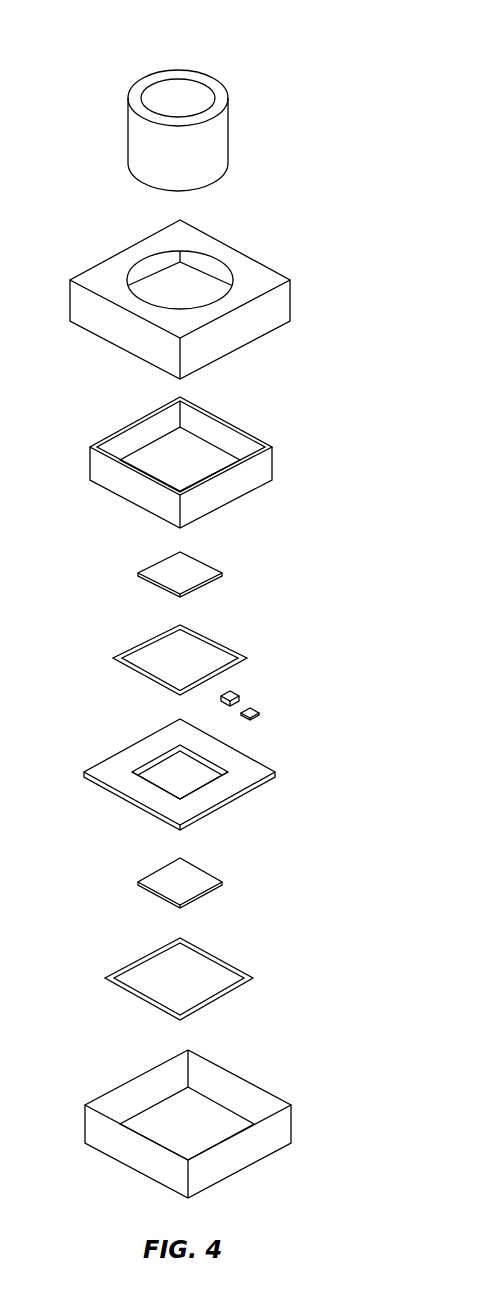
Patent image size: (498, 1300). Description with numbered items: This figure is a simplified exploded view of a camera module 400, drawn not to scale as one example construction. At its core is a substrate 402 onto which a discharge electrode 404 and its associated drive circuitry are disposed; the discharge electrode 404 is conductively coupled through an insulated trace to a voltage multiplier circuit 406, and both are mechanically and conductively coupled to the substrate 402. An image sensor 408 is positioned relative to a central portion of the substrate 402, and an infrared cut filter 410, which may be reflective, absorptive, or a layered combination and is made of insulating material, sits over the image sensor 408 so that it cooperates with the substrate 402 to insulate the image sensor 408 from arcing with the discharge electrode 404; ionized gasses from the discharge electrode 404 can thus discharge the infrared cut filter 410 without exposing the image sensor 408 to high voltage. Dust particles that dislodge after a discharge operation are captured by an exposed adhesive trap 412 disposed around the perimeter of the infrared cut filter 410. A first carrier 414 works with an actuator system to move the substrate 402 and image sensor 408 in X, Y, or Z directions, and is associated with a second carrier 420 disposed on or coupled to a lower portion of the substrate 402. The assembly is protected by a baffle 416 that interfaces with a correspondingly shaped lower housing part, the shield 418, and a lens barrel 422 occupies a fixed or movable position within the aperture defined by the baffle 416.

The camera module 400 is at (73, 48).
The substrate 402 is at (276, 772).
The discharge electrode 404 is at (240, 697).
The voltage multiplier circuit 406 is at (260, 714).
The image sensor 408 is at (223, 882).
The infrared cut filter 410 is at (223, 573).
The exposed adhesive trap 412 is at (248, 657).
The first carrier 414 is at (273, 460).
The baffle 416 is at (291, 298).
The shield 418 is at (292, 1122).
The second carrier 420 is at (254, 978).
The lens barrel 422 is at (229, 134).